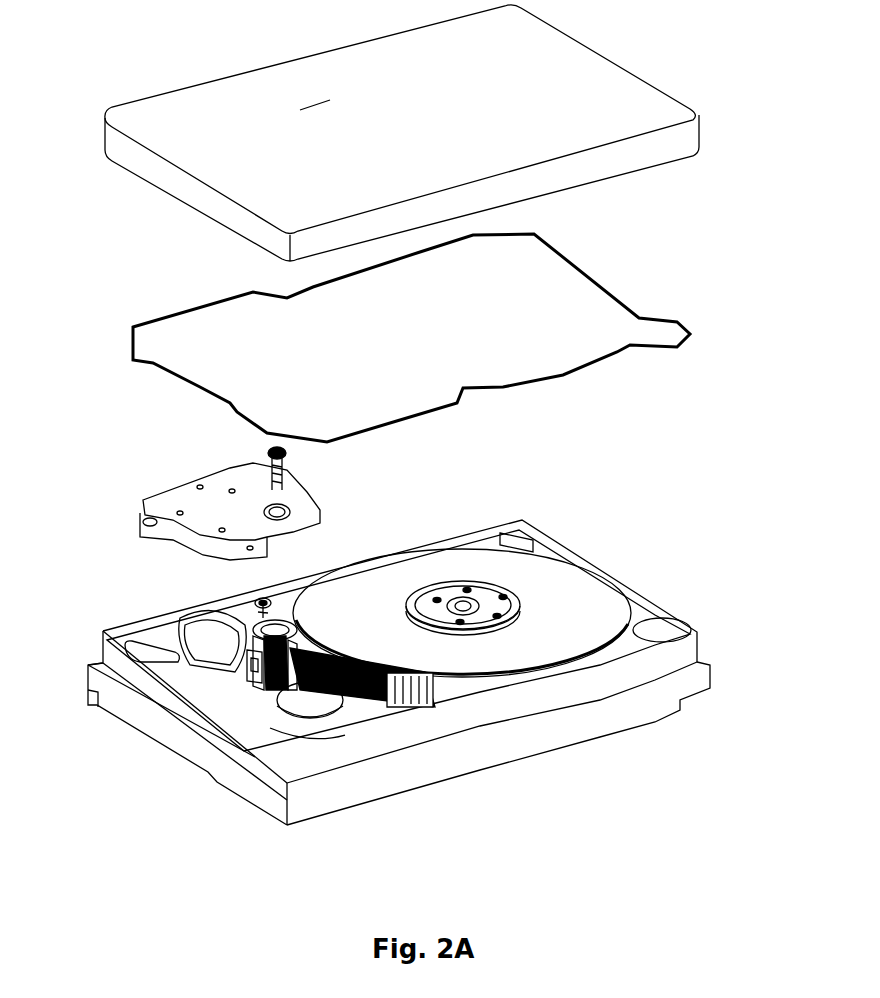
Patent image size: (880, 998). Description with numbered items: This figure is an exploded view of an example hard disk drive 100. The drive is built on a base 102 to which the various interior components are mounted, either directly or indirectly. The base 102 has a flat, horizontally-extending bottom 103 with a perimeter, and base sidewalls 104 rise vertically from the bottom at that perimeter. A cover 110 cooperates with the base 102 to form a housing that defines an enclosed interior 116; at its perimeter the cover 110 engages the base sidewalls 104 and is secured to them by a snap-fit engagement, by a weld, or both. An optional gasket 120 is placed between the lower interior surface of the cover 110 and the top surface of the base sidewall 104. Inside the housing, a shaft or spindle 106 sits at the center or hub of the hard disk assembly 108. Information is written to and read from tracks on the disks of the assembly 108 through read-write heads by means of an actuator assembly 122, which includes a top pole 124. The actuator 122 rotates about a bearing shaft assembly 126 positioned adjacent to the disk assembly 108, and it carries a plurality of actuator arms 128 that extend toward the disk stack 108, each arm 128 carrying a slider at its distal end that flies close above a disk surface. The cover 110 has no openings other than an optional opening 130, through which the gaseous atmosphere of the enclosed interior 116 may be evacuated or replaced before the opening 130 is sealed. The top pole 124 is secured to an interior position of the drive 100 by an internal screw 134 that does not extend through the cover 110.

The hard disk drive 100 is at (740, 78).
The base 102 is at (502, 755).
The bottom 103 is at (393, 811).
The base sidewalls 104 is at (598, 728).
The shaft or spindle 106 is at (527, 600).
The hard disk assembly 108 is at (594, 608).
The cover 110 is at (590, 75).
The enclosed interior 116 is at (198, 572).
The gasket 120 is at (610, 282).
The actuator assembly 122 is at (197, 623).
The top pole 124 is at (185, 486).
The bearing shaft assembly 126 is at (268, 626).
The actuator arms 128 is at (277, 680).
The opening 130 is at (343, 152).
The internal fastener (screw) 134 is at (290, 460).